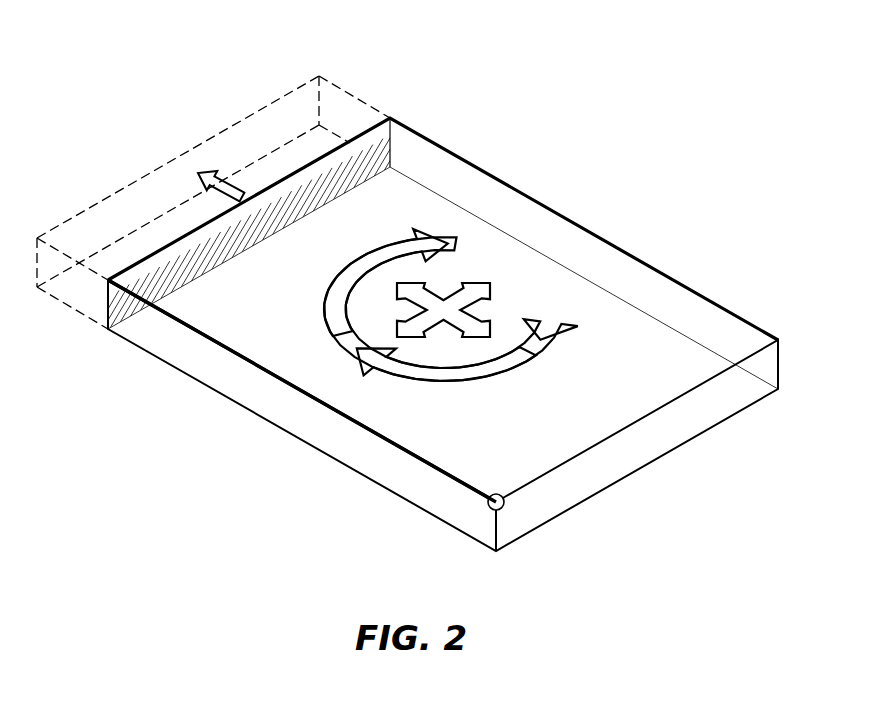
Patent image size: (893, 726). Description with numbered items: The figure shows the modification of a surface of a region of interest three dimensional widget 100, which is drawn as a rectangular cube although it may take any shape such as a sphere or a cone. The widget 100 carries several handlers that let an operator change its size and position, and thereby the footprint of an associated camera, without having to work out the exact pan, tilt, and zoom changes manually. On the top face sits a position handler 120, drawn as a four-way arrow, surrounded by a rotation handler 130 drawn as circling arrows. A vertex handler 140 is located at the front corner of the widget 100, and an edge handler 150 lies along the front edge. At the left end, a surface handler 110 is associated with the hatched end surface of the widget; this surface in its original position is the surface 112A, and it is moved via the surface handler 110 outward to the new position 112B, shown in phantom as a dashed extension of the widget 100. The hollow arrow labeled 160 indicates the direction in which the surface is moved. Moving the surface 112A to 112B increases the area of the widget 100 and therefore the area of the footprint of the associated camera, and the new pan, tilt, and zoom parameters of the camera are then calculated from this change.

The region of interest three dimensional widget 100 is at (677, 308).
The surface handler 110 is at (108, 306).
The surface 112A is at (377, 147).
The surface 112B is at (303, 105).
The position handler 120 is at (448, 297).
The rotation handler 130 is at (340, 302).
The vertex handler 140 is at (492, 505).
The edge handler 150 is at (302, 392).
The direction arrow 160 is at (209, 166).